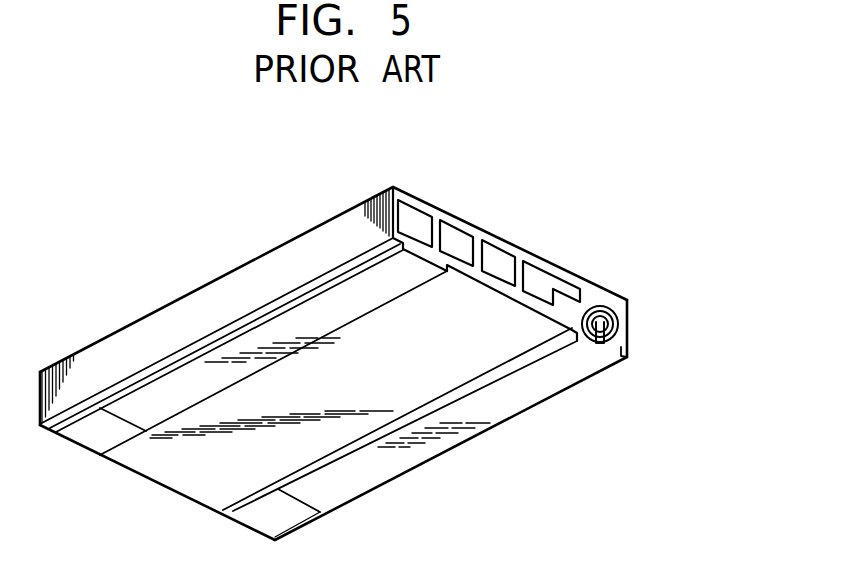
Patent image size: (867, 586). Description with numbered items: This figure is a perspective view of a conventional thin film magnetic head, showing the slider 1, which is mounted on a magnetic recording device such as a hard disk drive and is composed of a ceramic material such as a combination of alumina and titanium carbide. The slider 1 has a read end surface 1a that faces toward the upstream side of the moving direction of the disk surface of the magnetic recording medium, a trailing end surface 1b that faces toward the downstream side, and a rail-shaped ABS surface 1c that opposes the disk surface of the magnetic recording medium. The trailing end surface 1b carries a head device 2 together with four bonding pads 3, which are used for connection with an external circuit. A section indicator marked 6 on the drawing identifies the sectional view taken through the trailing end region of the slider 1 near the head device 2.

The slider 1 is at (168, 287).
The read end surface 1a is at (141, 476).
The trailing end surface 1b is at (628, 341).
The rail-shaped ABS surface 1c is at (365, 466).
The head device 2 is at (620, 320).
The bonding pads 3 is at (543, 282).
The section line for FIG. 6 is at (598, 413).